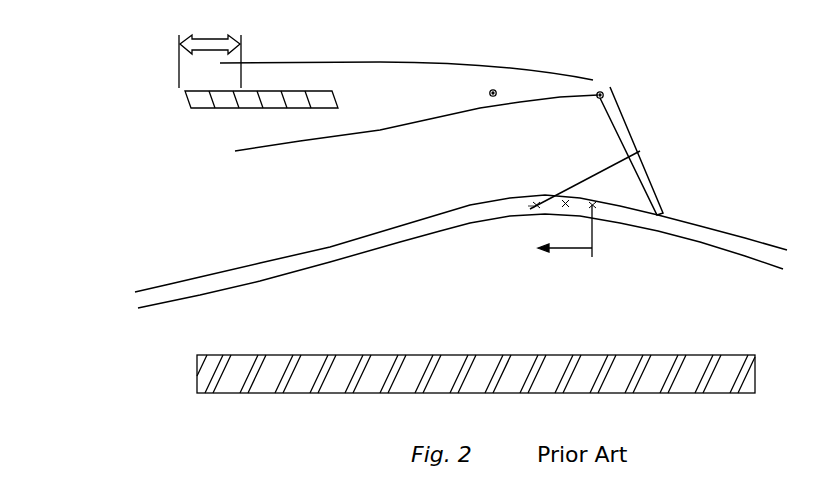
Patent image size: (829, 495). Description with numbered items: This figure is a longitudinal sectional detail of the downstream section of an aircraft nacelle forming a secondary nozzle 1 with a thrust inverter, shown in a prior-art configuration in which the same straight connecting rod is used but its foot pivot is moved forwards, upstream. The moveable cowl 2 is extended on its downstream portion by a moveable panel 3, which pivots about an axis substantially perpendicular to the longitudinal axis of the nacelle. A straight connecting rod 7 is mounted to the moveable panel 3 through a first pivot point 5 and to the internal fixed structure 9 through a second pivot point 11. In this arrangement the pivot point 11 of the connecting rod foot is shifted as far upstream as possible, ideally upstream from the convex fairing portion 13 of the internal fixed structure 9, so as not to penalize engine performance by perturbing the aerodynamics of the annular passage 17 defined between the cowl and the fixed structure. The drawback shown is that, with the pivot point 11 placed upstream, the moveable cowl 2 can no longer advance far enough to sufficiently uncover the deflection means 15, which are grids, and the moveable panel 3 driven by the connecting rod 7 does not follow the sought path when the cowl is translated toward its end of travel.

The secondary nozzle 1 is at (104, 92).
The moveable cowl 2 is at (342, 63).
The moveable panel 3 is at (622, 102).
The first pivot point 5 is at (640, 152).
The straight connecting rod 7 is at (595, 171).
The internal fixed structure 9 is at (343, 252).
The second pivot point 11 is at (535, 207).
The convex fairing portion 13 is at (565, 204).
The deflection means 15 is at (222, 112).
The annular passage 17 is at (201, 245).